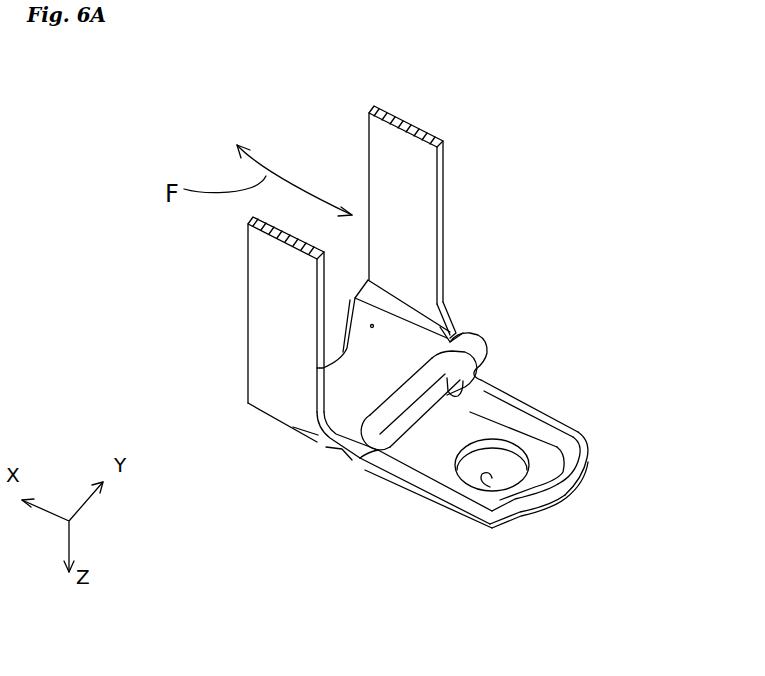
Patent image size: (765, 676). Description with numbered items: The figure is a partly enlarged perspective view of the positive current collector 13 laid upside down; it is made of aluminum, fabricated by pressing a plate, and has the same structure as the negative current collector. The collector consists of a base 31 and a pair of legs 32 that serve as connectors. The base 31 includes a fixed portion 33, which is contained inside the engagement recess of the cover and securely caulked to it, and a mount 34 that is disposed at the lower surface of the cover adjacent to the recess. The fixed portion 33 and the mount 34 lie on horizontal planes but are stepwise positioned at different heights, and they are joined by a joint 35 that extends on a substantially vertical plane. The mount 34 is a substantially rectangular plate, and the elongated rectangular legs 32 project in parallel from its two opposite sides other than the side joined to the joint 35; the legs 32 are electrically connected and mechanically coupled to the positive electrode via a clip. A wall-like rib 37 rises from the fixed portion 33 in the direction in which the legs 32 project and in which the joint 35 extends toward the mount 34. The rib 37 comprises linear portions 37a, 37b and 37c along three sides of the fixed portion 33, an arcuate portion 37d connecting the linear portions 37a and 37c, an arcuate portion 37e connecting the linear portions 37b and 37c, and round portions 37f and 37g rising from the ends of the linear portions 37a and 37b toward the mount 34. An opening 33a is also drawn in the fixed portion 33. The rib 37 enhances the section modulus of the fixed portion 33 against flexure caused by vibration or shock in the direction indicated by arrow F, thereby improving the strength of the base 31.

The positive current collector 13 is at (544, 144).
The base 31 is at (190, 442).
The legs 32 is at (374, 154).
The fixed portion 33 is at (373, 440).
The through hole 33a is at (490, 487).
The mount 34 is at (340, 405).
The joint 35 is at (403, 435).
The rib 37 is at (594, 437).
The linear portion 37a is at (513, 405).
The linear portion 37b is at (442, 492).
The linear portion 37c is at (575, 488).
The arcuate portion 37d is at (585, 455).
The arcuate portion 37e is at (520, 513).
The round portion 37f is at (484, 378).
The round portion 37g is at (390, 480).